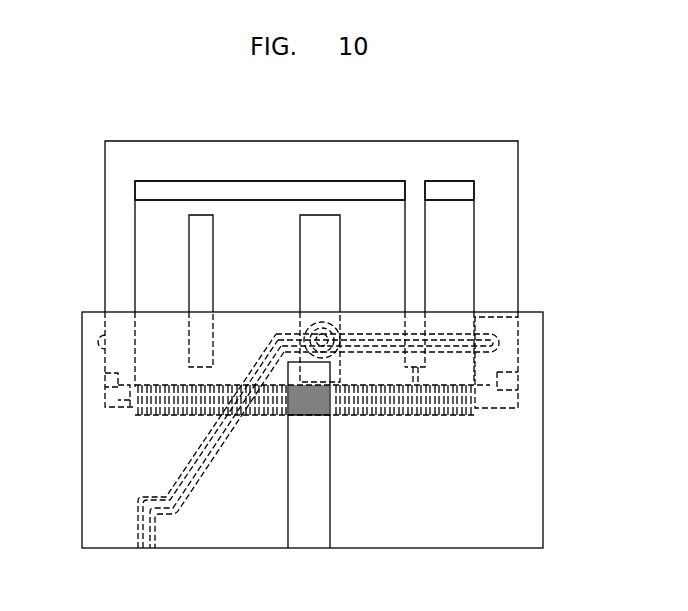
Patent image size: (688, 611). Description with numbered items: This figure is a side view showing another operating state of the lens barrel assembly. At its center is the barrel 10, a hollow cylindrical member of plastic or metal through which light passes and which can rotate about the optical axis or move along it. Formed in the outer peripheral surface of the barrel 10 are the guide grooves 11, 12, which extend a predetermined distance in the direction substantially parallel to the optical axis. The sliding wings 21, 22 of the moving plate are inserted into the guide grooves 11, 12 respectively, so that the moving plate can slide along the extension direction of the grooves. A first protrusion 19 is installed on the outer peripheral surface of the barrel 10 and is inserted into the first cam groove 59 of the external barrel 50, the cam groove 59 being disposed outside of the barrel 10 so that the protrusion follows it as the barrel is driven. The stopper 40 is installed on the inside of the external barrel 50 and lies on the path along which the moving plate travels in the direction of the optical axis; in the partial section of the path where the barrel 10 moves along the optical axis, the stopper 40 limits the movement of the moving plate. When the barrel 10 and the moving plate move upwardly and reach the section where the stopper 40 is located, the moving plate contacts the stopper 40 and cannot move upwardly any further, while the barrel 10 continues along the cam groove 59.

The barrel 10 is at (503, 199).
The guide groove 11 is at (292, 186).
The guide groove 12 is at (450, 185).
The first protrusion 19 is at (322, 342).
The sliding wing 21 is at (256, 212).
The sliding wing 22 is at (437, 215).
The stopper 40 is at (490, 367).
The external barrel 50 is at (538, 431).
The first cam groove 59 is at (196, 470).